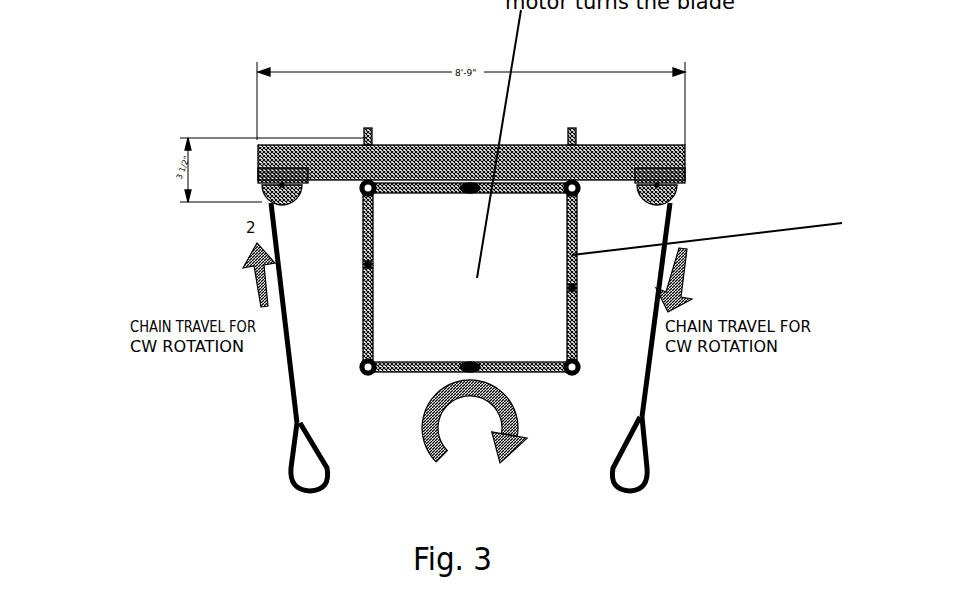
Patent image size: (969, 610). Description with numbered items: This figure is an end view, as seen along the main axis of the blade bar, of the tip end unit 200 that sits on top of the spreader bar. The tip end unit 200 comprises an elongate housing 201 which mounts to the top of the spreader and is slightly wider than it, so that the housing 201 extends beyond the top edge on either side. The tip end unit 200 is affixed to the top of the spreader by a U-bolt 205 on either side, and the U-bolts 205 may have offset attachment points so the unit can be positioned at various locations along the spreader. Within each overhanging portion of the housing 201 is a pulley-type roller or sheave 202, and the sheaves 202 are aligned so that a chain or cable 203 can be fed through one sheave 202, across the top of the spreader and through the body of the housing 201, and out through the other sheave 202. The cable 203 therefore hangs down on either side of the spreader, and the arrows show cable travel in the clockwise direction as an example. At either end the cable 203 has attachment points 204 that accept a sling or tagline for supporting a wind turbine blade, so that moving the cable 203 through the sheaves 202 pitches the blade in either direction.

The tip end unit 200 is at (647, 143).
The elongate housing 201 is at (407, 162).
The sheave 202 is at (368, 184).
The cable 203 is at (293, 372).
The attachment point 204 is at (292, 478).
The U-bolt 205 is at (365, 178).